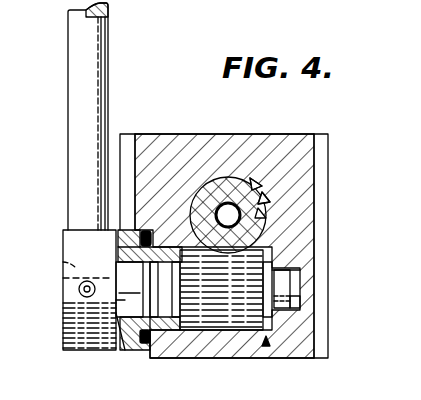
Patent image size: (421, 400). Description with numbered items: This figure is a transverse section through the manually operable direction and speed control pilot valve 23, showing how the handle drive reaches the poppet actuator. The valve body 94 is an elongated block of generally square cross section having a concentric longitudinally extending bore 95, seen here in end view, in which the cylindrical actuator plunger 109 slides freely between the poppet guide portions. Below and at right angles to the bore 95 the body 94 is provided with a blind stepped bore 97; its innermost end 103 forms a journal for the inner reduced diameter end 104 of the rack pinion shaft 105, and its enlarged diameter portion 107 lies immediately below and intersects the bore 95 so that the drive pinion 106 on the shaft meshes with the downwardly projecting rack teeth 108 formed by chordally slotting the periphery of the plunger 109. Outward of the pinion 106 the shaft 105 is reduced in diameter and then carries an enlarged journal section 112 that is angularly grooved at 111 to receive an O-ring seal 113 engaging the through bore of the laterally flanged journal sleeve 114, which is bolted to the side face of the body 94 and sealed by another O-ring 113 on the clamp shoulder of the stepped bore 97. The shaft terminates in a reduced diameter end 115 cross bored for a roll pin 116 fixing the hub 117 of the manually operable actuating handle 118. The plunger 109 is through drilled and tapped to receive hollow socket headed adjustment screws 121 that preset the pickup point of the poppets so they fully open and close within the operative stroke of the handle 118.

The pilot valve 23 is at (270, 135).
The valve body 94 is at (193, 140).
The bore 95 is at (225, 178).
The stepped bore 97 is at (266, 344).
The innermost end 103 is at (295, 304).
The inner reduced diameter end 104 is at (278, 283).
The rack pinion shaft 105 is at (125, 300).
The drive pinion 106 is at (193, 323).
The enlarged diameter portion 107 is at (218, 328).
The rack teeth 108 is at (285, 271).
The actuator plunger 109 is at (238, 203).
The groove 111 is at (132, 322).
The enlarged journal section 112 is at (129, 289).
The O-ring seal 113 is at (143, 238).
The journal sleeve 114 is at (130, 252).
The reduced diameter end 115 is at (83, 271).
The roll pin 116 is at (79, 287).
The hub 117 is at (78, 322).
The actuating handle 118 is at (88, 30).
The adjustment screws 121 is at (241, 226).